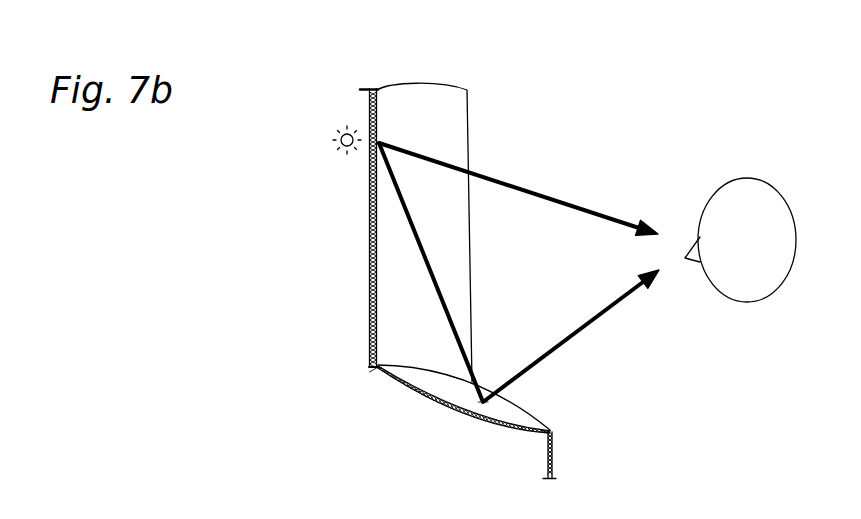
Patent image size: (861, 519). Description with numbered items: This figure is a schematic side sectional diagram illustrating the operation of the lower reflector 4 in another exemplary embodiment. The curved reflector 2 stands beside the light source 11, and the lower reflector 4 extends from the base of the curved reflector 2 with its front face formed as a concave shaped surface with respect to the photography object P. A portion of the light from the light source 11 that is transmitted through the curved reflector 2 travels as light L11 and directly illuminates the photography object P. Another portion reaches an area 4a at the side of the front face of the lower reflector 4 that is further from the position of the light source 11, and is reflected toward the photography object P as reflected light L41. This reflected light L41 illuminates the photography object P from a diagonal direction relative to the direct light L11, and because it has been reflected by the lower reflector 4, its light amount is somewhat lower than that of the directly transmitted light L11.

The curved reflector 2 is at (369, 210).
The light source 11 is at (337, 140).
The lower reflector 4 is at (552, 427).
The area 4a is at (497, 405).
The light L11 is at (532, 190).
The reflected light L41 is at (603, 318).
The photography object P is at (735, 163).